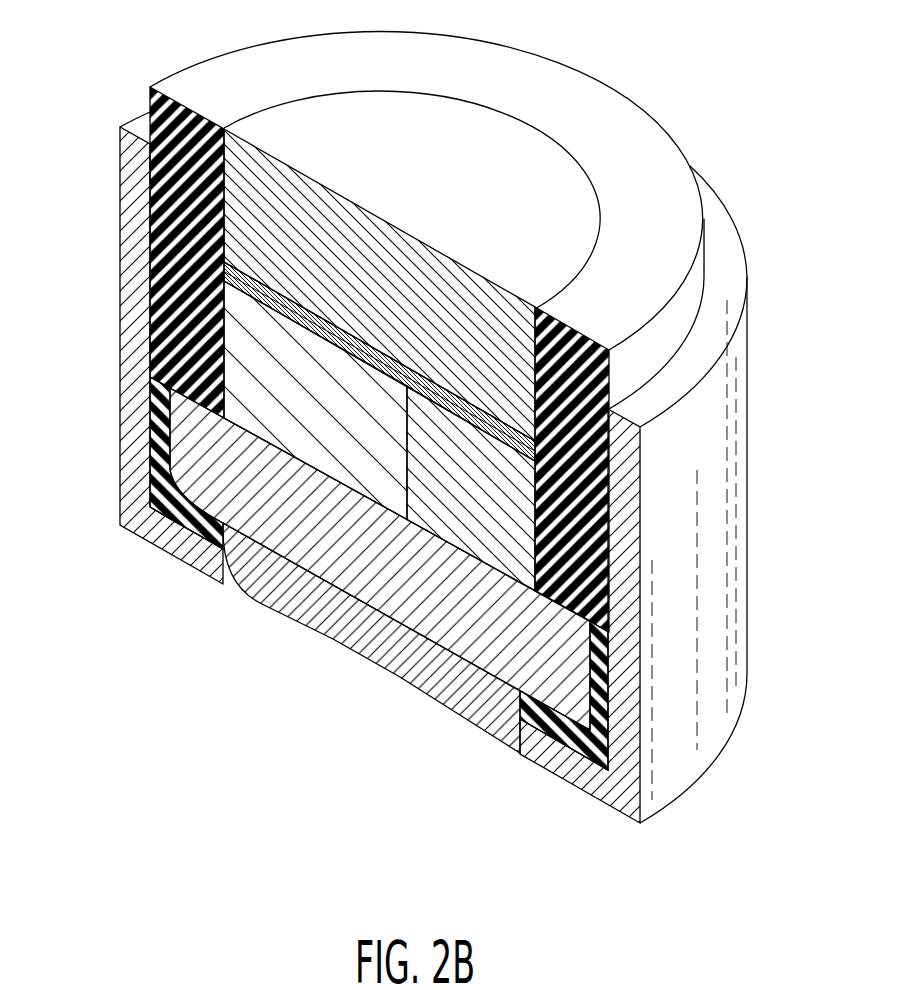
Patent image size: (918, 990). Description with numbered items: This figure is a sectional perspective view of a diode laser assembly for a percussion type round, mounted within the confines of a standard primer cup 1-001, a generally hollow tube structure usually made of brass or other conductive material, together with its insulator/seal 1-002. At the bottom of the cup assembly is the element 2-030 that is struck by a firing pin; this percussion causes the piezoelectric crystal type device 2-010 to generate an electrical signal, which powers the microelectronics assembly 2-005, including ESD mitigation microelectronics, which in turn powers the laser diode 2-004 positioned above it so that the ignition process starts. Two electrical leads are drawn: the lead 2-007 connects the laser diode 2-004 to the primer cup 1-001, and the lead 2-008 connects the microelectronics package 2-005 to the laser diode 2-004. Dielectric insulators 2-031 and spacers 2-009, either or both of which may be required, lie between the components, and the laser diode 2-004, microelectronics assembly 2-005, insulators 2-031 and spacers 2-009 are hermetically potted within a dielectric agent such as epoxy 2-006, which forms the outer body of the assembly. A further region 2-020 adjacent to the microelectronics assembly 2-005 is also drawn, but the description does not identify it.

The primer cup 1-001 is at (128, 461).
The insulator/seal 1-002 is at (182, 537).
The laser diode 2-004 is at (380, 278).
The microelectronics assembly 2-005 is at (344, 416).
The epoxy 2-006 is at (610, 587).
The electrical lead 2-007 is at (170, 247).
The electrical lead 2-008 is at (610, 517).
The spacers 2-009 is at (480, 415).
The piezoelectric crystal type device 2-010 is at (408, 567).
The body portion 2-020 is at (499, 500).
The firing-pin struck element 2-030 is at (333, 633).
The dielectric insulators 2-031 is at (383, 358).